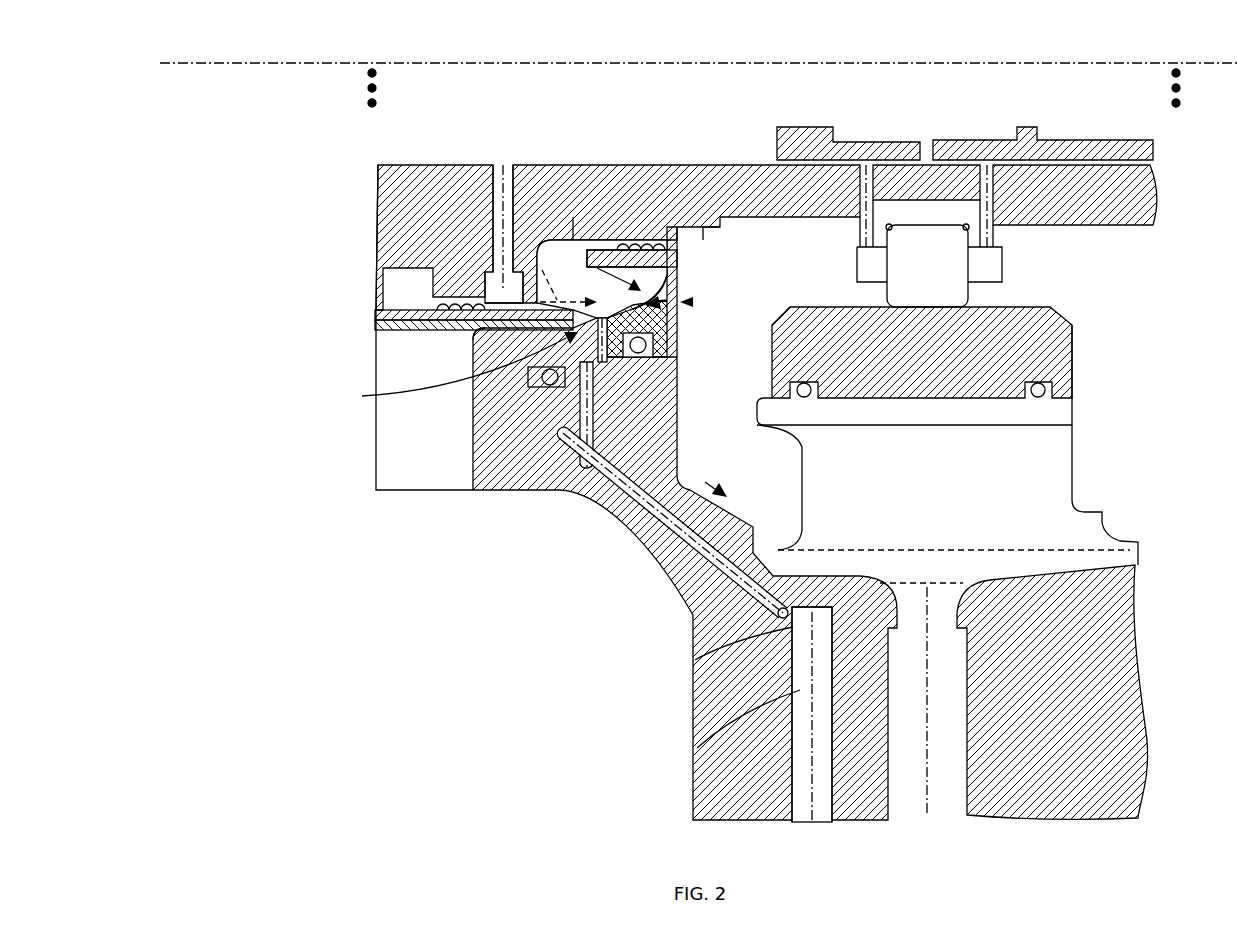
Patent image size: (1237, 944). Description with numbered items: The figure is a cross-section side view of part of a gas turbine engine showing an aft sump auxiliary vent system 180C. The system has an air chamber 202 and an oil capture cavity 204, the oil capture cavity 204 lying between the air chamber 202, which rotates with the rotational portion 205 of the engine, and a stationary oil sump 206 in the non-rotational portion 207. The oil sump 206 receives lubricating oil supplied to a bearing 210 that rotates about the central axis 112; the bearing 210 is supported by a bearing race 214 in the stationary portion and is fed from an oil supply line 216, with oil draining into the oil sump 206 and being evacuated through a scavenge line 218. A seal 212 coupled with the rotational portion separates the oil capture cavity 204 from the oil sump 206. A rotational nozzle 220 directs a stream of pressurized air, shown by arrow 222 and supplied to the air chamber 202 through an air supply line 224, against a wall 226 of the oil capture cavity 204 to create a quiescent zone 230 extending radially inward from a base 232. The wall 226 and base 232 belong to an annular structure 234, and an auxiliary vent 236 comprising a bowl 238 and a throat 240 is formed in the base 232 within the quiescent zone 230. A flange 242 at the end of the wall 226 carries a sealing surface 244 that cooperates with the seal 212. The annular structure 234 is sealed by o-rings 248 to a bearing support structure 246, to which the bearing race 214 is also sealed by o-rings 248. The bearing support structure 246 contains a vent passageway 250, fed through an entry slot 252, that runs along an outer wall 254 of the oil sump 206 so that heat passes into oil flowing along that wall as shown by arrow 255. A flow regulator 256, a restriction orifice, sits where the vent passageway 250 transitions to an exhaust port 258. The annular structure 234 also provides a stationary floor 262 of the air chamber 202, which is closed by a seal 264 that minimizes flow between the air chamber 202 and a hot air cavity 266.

The central axis 112 is at (258, 50).
The aft sump auxiliary vent system 180C is at (165, 125).
The air chamber 202 is at (487, 270).
The oil capture cavity 204 is at (570, 238).
The rotational portion 205 is at (292, 199).
The oil sump 206 is at (787, 278).
The non-rotational portion 207 is at (292, 399).
The bearing 210 is at (948, 258).
The seal 212 is at (643, 228).
The bearing race 214 is at (1060, 345).
The oil supply line 216 is at (937, 150).
The scavenge line 218 is at (967, 708).
The nozzle 220 is at (453, 369).
The arrow 222 is at (507, 273).
The air supply line 224 is at (510, 175).
The wall 226 is at (670, 268).
The quiescent zone 230 is at (690, 258).
The base 232 is at (670, 292).
The annular structure 234 is at (693, 302).
The auxiliary vent 236 is at (520, 362).
The bowl 238 is at (673, 321).
The throat 240 is at (677, 353).
The flange 242 is at (622, 240).
The sealing surface 244 is at (667, 218).
The bearing support structure 246 is at (667, 537).
The o-rings 248 is at (1055, 392).
The vent passageway 250 is at (612, 490).
The entry slot 252 is at (595, 362).
The outer wall 254 is at (680, 477).
The arrow 255 is at (683, 450).
The flow regulator 256 is at (697, 660).
The exhaust port 258 is at (697, 748).
The stationary floor 262 is at (457, 324).
The seal 264 is at (432, 297).
The hot air cavity 266 is at (360, 303).